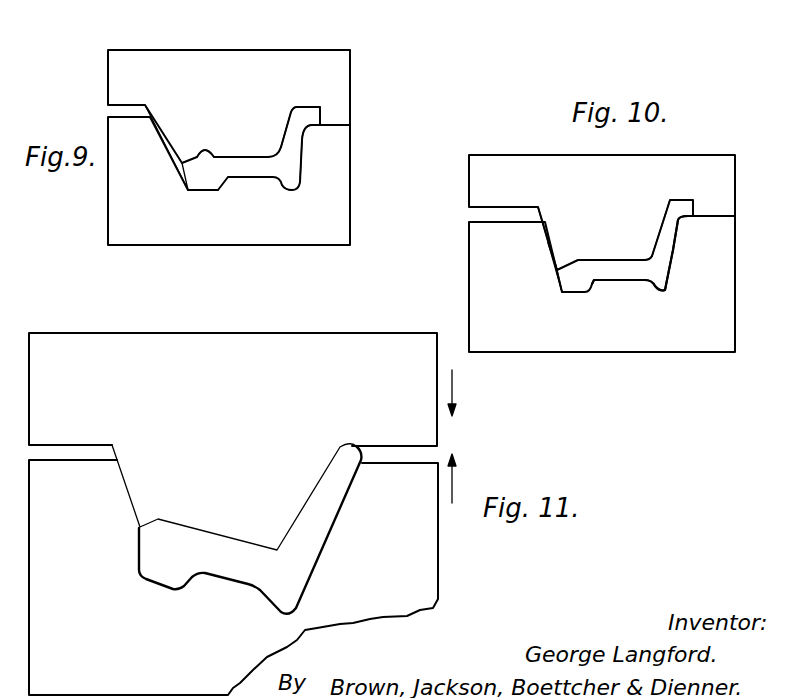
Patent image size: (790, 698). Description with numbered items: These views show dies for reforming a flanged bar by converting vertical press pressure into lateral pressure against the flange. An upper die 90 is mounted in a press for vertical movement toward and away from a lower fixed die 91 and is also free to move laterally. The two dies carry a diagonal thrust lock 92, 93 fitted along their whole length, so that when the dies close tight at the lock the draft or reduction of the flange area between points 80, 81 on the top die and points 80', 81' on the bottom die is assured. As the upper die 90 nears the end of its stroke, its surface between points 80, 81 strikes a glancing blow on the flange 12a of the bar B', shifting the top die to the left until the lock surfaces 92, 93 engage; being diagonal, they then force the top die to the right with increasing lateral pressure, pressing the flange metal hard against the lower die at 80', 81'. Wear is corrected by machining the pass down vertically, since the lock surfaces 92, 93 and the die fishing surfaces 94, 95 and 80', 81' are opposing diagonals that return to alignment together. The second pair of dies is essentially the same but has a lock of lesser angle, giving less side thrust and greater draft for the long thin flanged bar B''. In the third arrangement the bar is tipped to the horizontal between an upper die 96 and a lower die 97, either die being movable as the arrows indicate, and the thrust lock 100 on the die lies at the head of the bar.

In FIG. 9, the upper die 90 is at (235, 58).
In FIG. 10, the upper die 90 is at (660, 166).
In FIG. 9, the lower fixed die 91 is at (287, 245).
In FIG. 10, the lower fixed die 91 is at (665, 343).
In FIG. 9, the diagonal thrust lock surface 92 is at (150, 116).
In FIG. 10, the diagonal thrust lock surface 92 is at (543, 223).
In FIG. 9, the diagonal thrust lock surface 93 is at (182, 163).
In FIG. 10, the diagonal thrust lock surface 93 is at (557, 270).
In FIG. 9, the die fishing surface 94 is at (182, 163).
In FIG. 10, the die fishing surface 94 is at (557, 270).
In FIG. 9, the die fishing surface 95 is at (188, 190).
In FIG. 10, the die fishing surface 95 is at (562, 292).
In FIG. 9, the flange area point 80 is at (292, 112).
In FIG. 10, the flange area point 80 is at (663, 214).
In FIG. 9, the flange area point 81 is at (269, 143).
In FIG. 10, the flange area point 81 is at (642, 243).
In FIG. 9, the lower die flange surface point 80' is at (323, 153).
In FIG. 10, the lower die flange surface point 80' is at (693, 253).
In FIG. 9, the lower die flange surface point 81' is at (307, 199).
In FIG. 10, the lower die flange surface point 81' is at (676, 294).
In FIG. 9, the flange 12a is at (293, 140).
In FIG. 9, the bar B' is at (250, 196).
In FIG. 10, the bar B'' is at (618, 297).
In FIG. 11, the upper die 96 is at (233, 389).
In FIG. 11, the lower die 97 is at (233, 577).
In FIG. 11, the thrust lock 100 is at (127, 495).